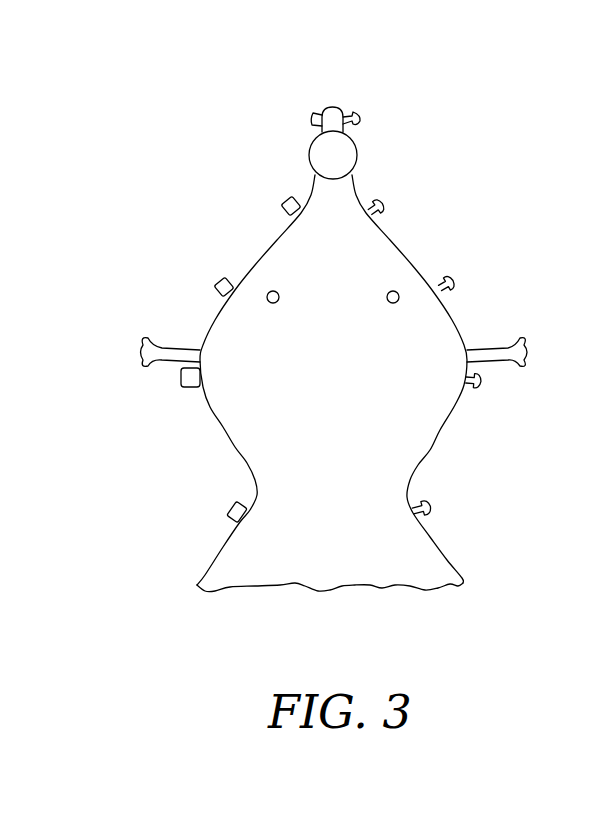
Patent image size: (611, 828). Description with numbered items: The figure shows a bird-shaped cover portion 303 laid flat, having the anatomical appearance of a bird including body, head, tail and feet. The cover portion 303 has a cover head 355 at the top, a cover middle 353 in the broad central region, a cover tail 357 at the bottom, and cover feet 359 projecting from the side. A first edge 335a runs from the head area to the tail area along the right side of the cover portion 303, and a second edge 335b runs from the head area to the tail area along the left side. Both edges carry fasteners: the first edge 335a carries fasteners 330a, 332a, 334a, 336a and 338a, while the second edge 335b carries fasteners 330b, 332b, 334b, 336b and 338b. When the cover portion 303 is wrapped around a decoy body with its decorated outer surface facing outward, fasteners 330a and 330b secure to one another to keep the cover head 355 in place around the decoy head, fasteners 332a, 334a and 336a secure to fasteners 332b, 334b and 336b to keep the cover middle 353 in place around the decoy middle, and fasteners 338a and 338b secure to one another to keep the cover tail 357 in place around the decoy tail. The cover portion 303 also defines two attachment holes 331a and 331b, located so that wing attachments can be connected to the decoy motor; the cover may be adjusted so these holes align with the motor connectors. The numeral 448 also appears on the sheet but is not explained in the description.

The cover portion 303 is at (352, 491).
The fastener 330a is at (357, 115).
The fastener 330b is at (312, 117).
The attachment hole 331a is at (272, 291).
The attachment hole 331b is at (398, 292).
The fastener 332a is at (381, 200).
The fastener 332b is at (293, 203).
The fastener 334a is at (455, 278).
The fastener 334b is at (220, 283).
The first edge 335a is at (390, 240).
The second edge 335b is at (203, 328).
The fastener 336a is at (490, 388).
The fastener 336b is at (190, 380).
The fastener 338a is at (437, 505).
The fastener 338b is at (227, 513).
The cover middle 353 is at (380, 345).
The cover head 355 is at (315, 153).
The cover tail 357 is at (335, 567).
The cover feet 359 is at (528, 345).
The reference element 448 is at (610, 588).